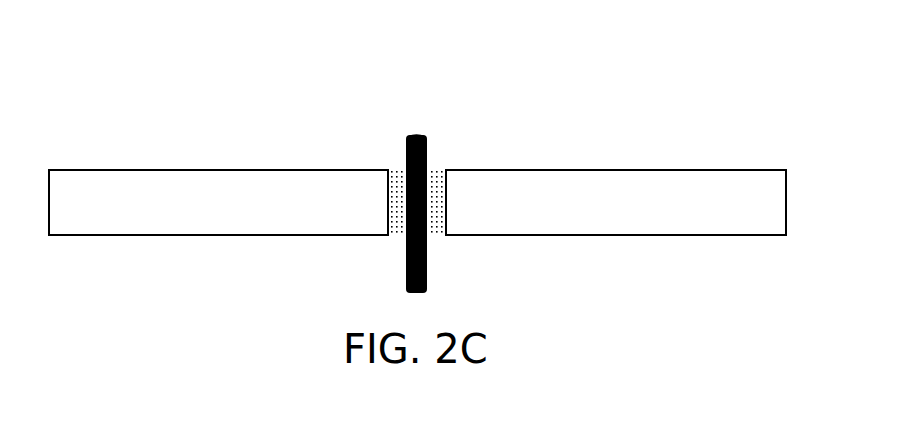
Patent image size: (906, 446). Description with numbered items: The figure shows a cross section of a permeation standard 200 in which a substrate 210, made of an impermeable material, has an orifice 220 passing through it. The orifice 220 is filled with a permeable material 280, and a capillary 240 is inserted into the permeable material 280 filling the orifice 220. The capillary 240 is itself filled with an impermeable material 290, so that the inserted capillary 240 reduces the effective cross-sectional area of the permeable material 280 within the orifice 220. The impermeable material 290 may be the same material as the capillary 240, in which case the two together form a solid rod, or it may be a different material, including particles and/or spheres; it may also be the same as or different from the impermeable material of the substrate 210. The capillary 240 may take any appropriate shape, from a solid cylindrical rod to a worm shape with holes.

The bonded assembly 200 is at (118, 131).
The substrate 210 is at (563, 236).
The orifice 220 is at (396, 251).
The capillary 240 is at (427, 265).
The permeable material 280 is at (435, 158).
The impermeable material 290 is at (418, 135).